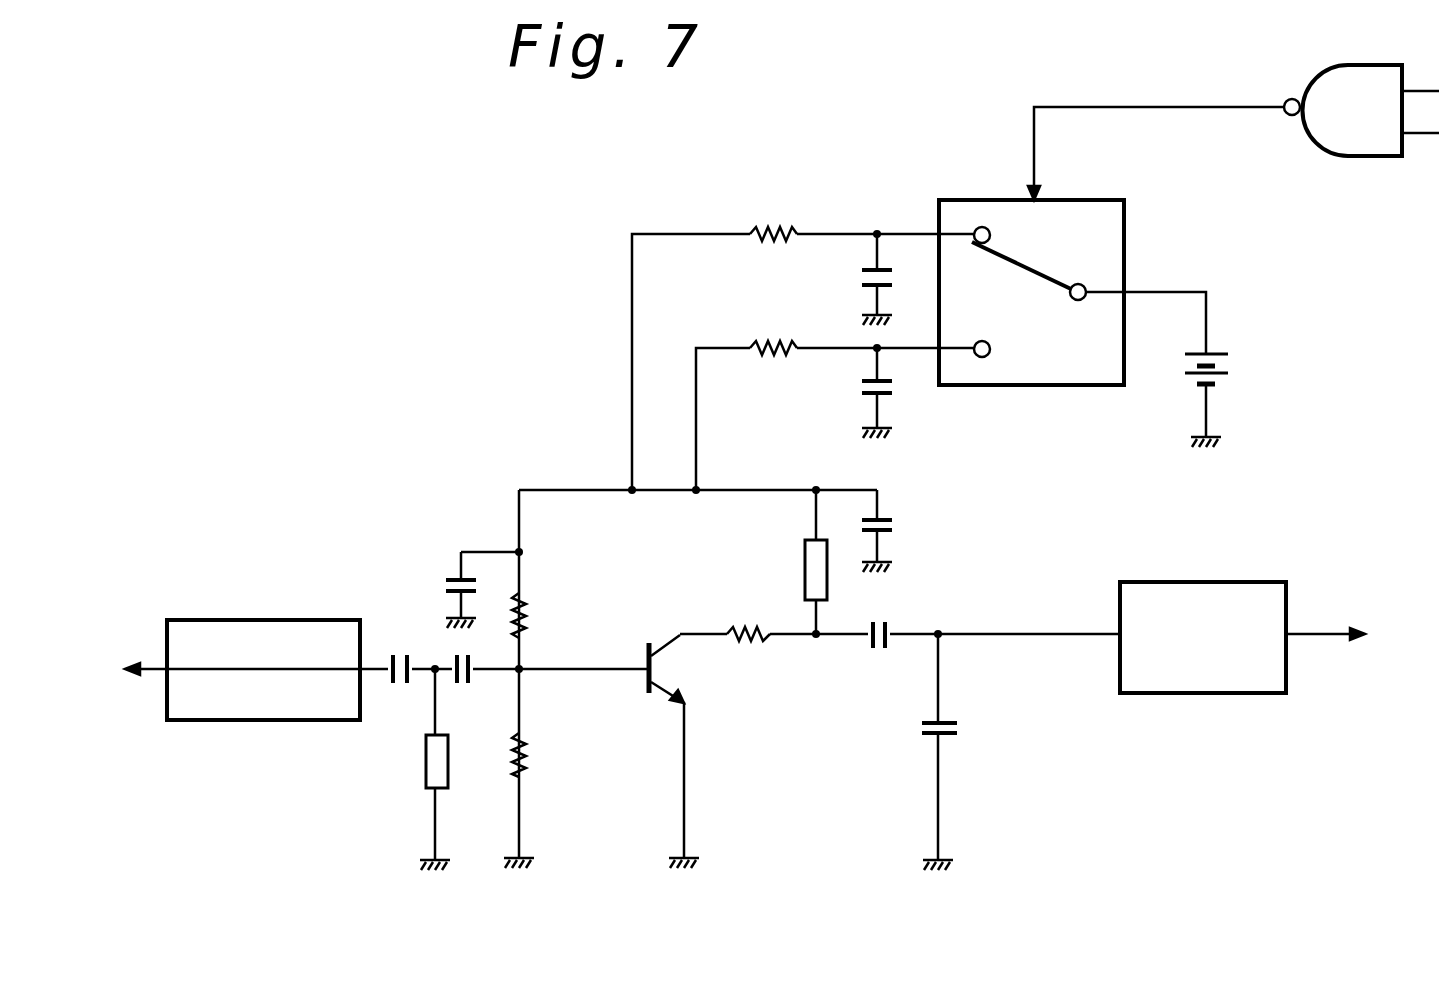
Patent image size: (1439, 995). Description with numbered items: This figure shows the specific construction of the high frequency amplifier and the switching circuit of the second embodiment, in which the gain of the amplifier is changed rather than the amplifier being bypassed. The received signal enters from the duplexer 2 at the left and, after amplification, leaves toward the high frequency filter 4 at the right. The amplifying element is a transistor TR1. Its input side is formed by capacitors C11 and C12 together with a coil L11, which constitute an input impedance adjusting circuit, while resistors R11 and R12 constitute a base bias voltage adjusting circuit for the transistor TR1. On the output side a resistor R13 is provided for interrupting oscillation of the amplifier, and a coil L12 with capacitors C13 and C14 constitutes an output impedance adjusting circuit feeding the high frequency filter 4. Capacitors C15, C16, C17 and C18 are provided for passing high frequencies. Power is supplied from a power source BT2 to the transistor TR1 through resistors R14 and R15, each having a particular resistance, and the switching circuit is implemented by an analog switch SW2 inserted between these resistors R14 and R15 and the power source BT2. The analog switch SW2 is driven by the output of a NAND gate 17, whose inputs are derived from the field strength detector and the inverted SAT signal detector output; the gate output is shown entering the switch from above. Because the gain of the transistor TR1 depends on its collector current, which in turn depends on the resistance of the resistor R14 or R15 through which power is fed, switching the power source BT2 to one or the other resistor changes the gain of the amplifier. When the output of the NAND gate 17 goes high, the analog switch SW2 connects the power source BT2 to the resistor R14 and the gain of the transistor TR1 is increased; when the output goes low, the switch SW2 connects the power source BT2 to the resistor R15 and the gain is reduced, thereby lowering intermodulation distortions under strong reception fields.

The duplexer 2 is at (245, 620).
The high frequency filter 4 is at (1195, 582).
The NAND gate 17 is at (1358, 159).
The analog switch SW2 is at (1128, 233).
The power source BT2 is at (1237, 366).
The resistor R11 is at (524, 616).
The resistor R12 is at (526, 754).
The resistor R13 is at (752, 640).
The resistor R14 is at (775, 232).
The resistor R15 is at (769, 355).
The capacitor C11 is at (403, 650).
The capacitor C12 is at (463, 686).
The capacitor C13 is at (877, 650).
The capacitor C14 is at (962, 732).
The capacitor C15 is at (446, 582).
The capacitor C16 is at (860, 279).
The capacitor C17 is at (864, 393).
The capacitor C18 is at (897, 526).
The coil L11 is at (426, 762).
The coil L12 is at (803, 566).
The transistor TR1 is at (642, 656).